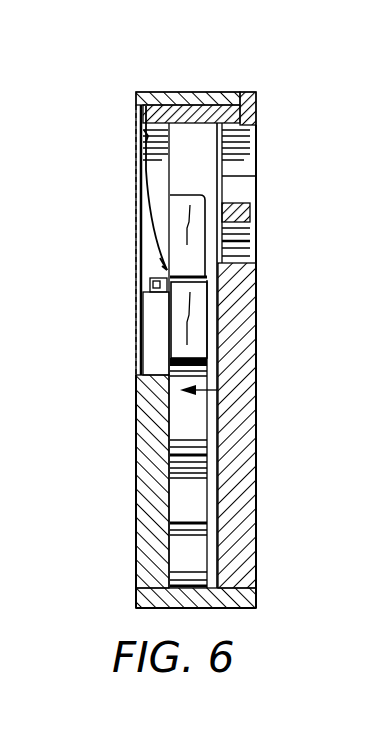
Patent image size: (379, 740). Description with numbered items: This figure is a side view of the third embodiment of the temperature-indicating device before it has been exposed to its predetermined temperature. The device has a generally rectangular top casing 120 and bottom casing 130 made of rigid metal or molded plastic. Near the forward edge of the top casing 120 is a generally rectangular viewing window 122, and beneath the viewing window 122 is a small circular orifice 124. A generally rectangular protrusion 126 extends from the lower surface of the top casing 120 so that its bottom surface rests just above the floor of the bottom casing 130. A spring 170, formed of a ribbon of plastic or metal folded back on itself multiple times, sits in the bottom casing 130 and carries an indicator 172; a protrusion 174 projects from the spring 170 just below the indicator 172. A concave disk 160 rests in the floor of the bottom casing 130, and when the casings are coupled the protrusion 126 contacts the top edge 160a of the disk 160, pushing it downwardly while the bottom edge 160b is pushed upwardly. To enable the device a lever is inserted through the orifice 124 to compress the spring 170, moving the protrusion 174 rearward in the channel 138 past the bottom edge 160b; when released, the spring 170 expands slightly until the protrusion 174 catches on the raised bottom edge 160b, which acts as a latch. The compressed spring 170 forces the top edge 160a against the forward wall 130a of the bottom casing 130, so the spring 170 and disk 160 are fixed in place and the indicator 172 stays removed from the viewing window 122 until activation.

The top casing 120 is at (262, 338).
The viewing window 122 is at (240, 178).
The small circular orifice 124 is at (235, 252).
The protrusion 126 is at (257, 108).
The bottom casing 130 is at (128, 448).
The forward wall 130a is at (178, 93).
The second rectangular recess 138 is at (150, 281).
The disk 160 is at (140, 187).
The top edge of the disk 160a is at (143, 138).
The bottom edge of the disk 160b is at (140, 256).
The spring 170 is at (256, 404).
The indicator 172 is at (200, 207).
The protrusion 174 is at (142, 292).